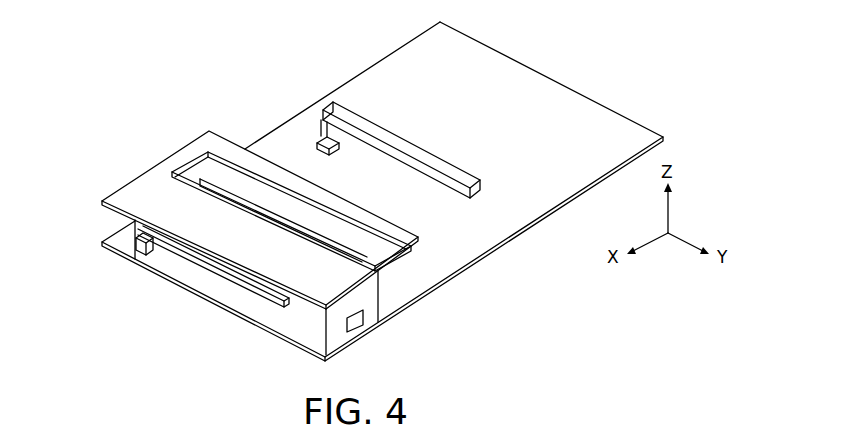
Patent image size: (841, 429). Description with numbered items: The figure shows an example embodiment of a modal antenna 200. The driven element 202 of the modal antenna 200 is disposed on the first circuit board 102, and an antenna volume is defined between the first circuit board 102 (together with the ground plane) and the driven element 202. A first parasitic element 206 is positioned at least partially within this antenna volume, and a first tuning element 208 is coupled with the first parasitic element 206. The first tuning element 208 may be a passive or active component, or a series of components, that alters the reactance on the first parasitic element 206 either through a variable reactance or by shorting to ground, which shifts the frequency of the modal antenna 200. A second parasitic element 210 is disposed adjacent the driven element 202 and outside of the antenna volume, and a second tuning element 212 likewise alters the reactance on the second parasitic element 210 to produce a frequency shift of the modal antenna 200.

The modal antenna 200 is at (127, 57).
The first circuit board 102 is at (360, 72).
The driven element 202 is at (148, 170).
The first parasitic element 206 is at (243, 291).
The first tuning element 208 is at (123, 257).
The second parasitic element 210 is at (425, 151).
The second tuning element 212 is at (338, 147).